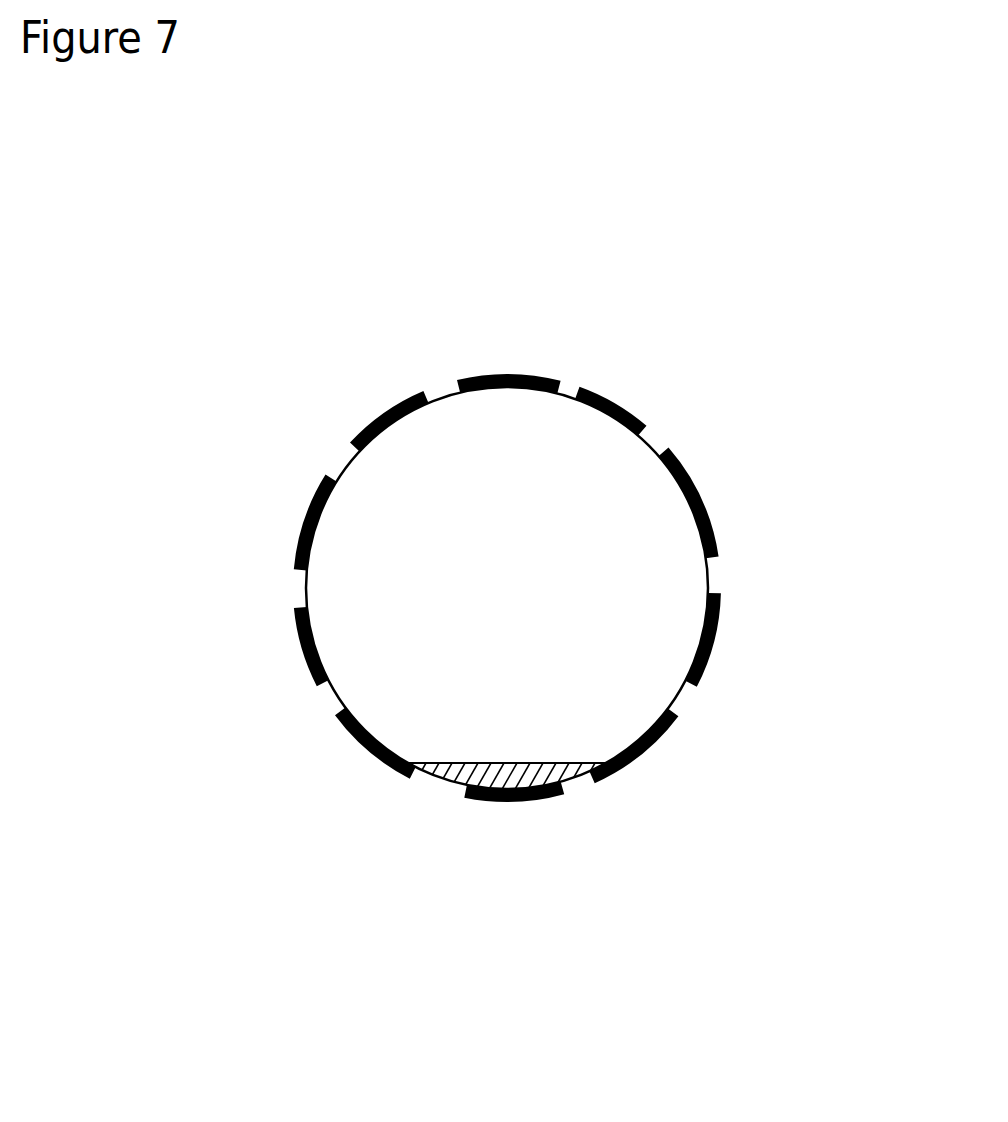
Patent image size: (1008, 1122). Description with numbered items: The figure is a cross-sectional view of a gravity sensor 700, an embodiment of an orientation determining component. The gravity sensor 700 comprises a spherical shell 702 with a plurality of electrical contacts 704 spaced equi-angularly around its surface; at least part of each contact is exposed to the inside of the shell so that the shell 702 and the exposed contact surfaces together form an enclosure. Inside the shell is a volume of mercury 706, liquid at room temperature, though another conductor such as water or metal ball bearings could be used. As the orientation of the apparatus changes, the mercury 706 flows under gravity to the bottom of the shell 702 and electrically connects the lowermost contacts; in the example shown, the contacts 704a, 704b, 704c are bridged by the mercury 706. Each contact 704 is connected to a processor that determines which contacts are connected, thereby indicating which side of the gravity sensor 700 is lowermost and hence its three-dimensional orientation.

The gravity sensor 700 is at (357, 367).
The spherical shell 702 is at (350, 455).
The electrical contacts 704 is at (703, 505).
The electrical contact 704a is at (392, 767).
The electrical contact 704b is at (532, 795).
The electrical contact 704c is at (612, 768).
The mercury 706 is at (442, 768).